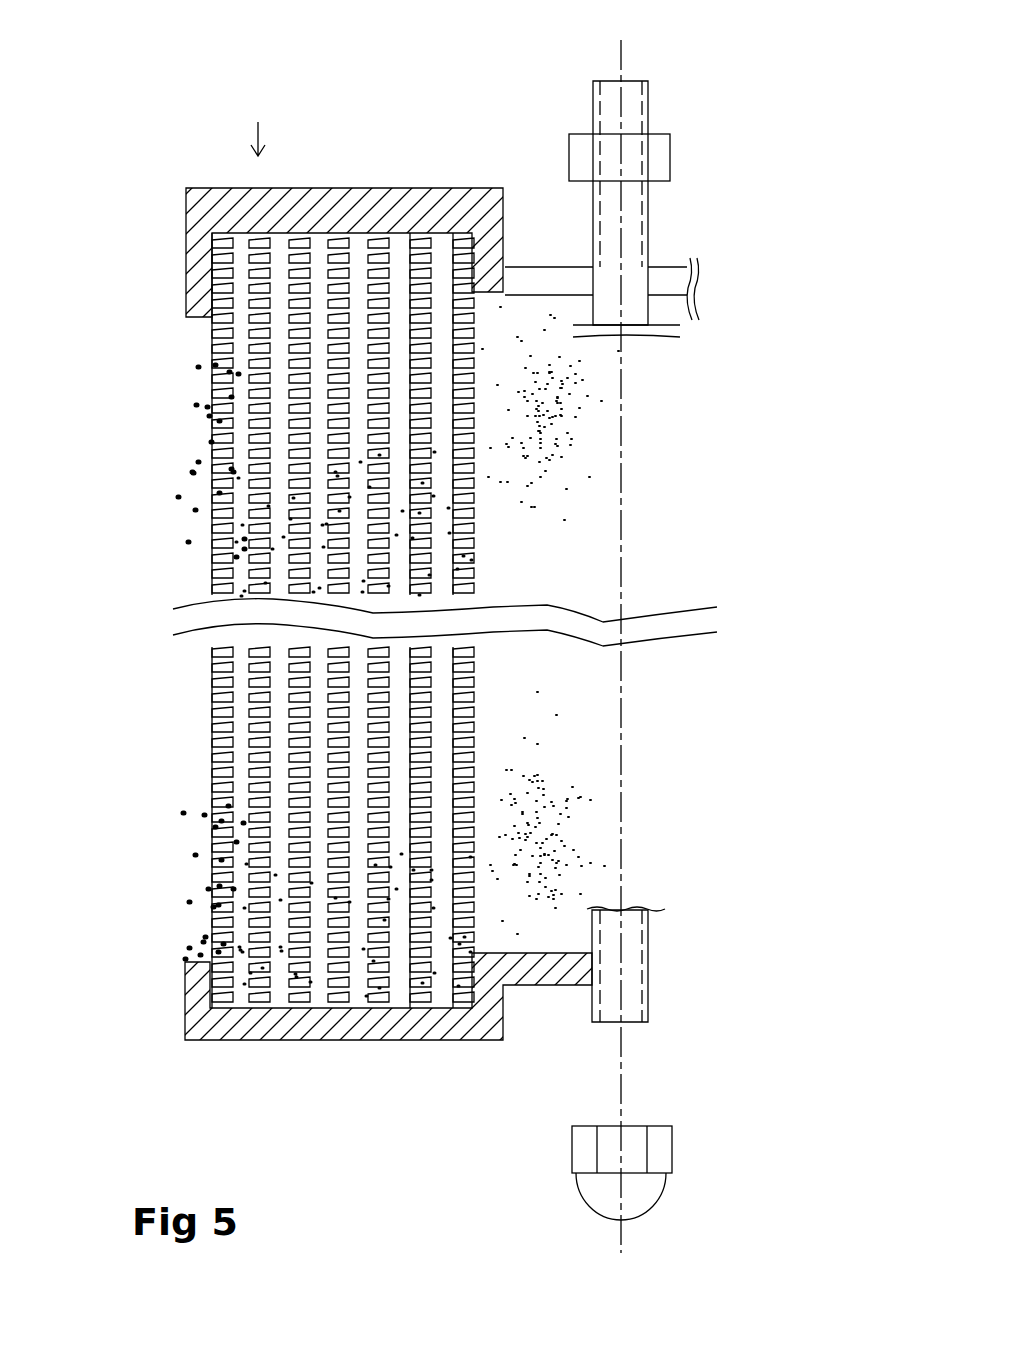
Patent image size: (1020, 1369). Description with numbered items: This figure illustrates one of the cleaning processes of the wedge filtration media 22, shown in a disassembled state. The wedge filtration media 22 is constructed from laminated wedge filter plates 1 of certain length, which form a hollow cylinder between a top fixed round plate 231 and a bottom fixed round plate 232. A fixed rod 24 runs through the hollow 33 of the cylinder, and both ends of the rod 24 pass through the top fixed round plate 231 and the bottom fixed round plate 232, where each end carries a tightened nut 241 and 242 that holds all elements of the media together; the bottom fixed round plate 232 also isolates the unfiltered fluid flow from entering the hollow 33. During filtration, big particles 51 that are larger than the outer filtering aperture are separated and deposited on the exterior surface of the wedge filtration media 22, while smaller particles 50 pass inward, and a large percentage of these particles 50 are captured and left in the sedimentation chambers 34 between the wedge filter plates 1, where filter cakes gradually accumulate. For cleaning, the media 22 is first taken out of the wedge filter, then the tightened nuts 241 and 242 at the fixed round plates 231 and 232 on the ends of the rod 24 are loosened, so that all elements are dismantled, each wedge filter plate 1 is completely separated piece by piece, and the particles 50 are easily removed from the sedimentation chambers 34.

The wedge filter plate 1 is at (212, 707).
The wedge filtration media 22 is at (259, 115).
The top fixed round plate 231 is at (327, 190).
The bottom fixed round plate 232 is at (433, 1037).
The rod 24 is at (610, 83).
The tightened nut 241 is at (665, 145).
The tightened nut 242 is at (638, 1127).
The hollow 33 is at (550, 620).
The sedimentation chamber 34 is at (213, 560).
The particles 50 is at (317, 483).
The big particles 51 is at (187, 847).